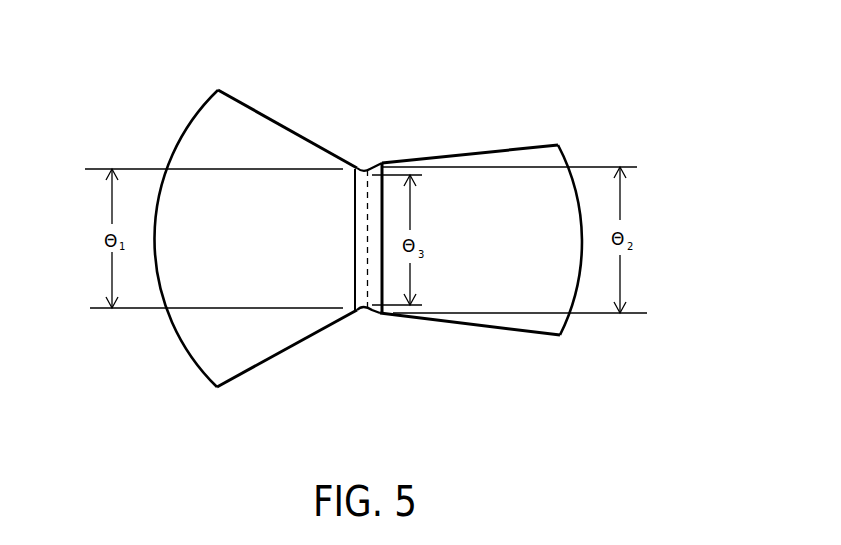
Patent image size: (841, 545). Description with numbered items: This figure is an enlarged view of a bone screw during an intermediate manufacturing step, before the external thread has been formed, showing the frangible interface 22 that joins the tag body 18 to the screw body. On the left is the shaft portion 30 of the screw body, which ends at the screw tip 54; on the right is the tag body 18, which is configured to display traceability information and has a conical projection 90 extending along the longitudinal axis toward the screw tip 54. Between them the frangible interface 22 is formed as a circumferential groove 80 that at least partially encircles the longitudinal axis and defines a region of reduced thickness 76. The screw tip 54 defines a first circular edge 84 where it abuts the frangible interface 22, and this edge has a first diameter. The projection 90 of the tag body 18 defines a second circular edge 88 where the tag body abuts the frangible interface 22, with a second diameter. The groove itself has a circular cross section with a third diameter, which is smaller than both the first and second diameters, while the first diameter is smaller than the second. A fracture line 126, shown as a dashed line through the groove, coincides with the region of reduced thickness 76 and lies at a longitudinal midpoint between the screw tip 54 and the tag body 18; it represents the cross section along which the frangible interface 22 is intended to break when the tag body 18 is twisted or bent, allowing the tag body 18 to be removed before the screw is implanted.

The tag body 18 is at (520, 138).
The frangible interface 22 is at (372, 236).
The shaft portion 30 is at (203, 150).
The screw tip 54 is at (335, 338).
The region of reduced thickness 76 is at (365, 318).
The circumferential groove 80 is at (362, 168).
The first circular edge 84 is at (307, 210).
The second circular edge 88 is at (383, 263).
The projection 90 is at (538, 338).
The fracture line 126 is at (368, 285).